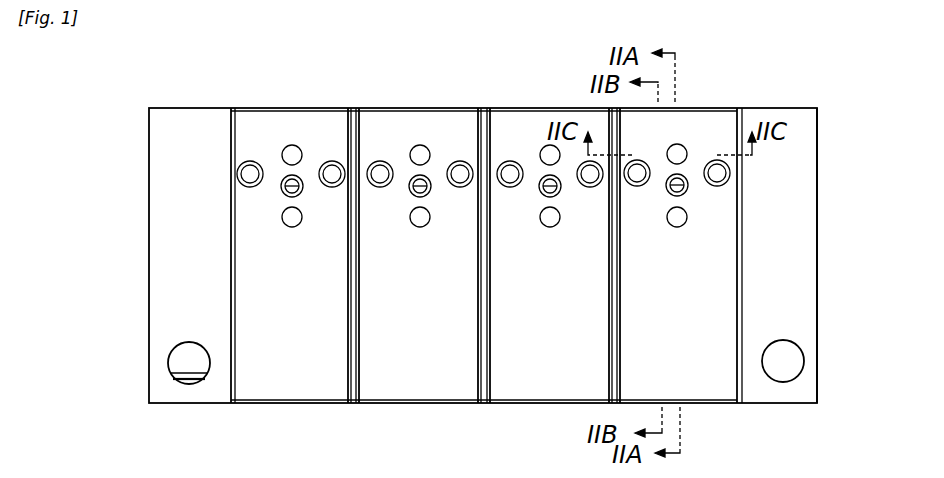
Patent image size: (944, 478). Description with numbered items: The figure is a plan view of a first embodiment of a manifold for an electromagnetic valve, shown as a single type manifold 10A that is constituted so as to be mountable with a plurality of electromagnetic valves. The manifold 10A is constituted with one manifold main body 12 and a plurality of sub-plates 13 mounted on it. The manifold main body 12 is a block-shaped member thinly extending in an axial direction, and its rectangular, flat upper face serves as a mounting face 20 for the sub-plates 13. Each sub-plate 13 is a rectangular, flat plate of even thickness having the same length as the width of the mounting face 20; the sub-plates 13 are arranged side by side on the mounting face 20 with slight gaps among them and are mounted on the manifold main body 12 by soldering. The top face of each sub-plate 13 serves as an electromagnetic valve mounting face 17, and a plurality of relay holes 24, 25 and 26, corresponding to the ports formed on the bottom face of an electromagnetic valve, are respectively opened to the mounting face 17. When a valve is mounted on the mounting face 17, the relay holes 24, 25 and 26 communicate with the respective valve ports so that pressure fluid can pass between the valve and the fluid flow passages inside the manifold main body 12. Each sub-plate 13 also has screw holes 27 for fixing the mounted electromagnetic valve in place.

The manifold 10A is at (828, 99).
The manifold main body 12 is at (817, 227).
The sub-plate 13 is at (372, 122).
The electromagnetic valve mounting face 17 is at (434, 349).
The mounting face 20 is at (785, 305).
The relay hole 24 is at (422, 223).
The relay hole 25 is at (420, 180).
The relay hole 26 is at (422, 150).
The screw hole 27 is at (633, 175).